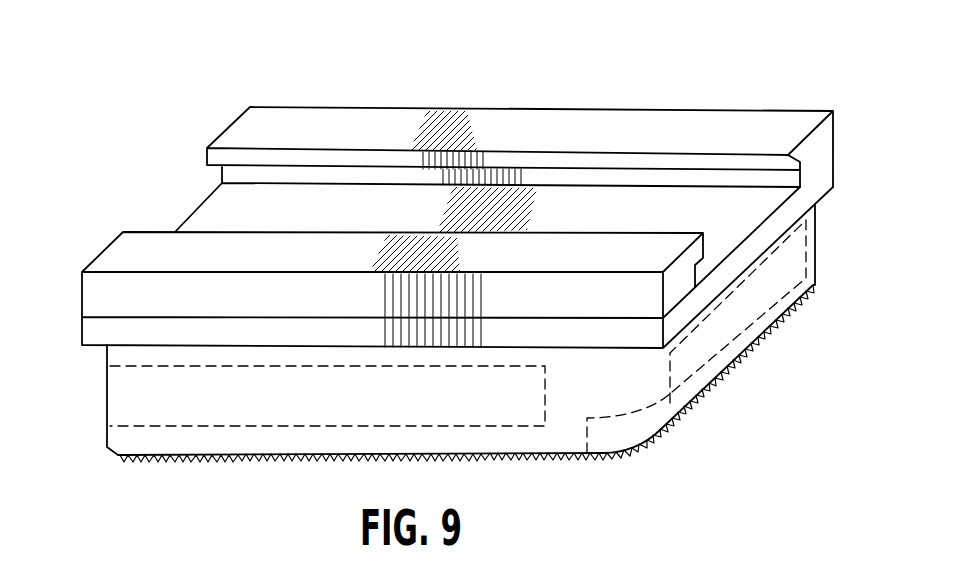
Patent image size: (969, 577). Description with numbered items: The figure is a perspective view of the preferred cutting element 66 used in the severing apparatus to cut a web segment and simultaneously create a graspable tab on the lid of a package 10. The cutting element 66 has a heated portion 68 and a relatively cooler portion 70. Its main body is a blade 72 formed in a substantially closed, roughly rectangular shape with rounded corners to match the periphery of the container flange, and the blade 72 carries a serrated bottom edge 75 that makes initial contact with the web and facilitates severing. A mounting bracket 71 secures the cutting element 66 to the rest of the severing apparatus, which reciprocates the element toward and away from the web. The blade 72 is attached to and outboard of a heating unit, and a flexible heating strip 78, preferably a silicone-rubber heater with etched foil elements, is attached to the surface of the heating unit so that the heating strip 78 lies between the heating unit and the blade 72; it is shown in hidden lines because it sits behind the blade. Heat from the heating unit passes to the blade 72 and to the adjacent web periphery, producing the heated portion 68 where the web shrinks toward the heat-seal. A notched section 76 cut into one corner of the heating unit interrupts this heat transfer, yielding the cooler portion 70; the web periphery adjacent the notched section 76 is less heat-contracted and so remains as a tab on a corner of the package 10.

The cutting element 66 is at (166, 101).
The mounting bracket 71 is at (100, 252).
The blade 72 is at (113, 450).
The relatively cooler portion 70 is at (653, 446).
The serrated bottom edge 75 is at (700, 402).
The heating strip 78 is at (137, 398).
The notched section 76 is at (580, 434).
The heated portion 68 is at (250, 405).
The package 10 is at (628, 47).